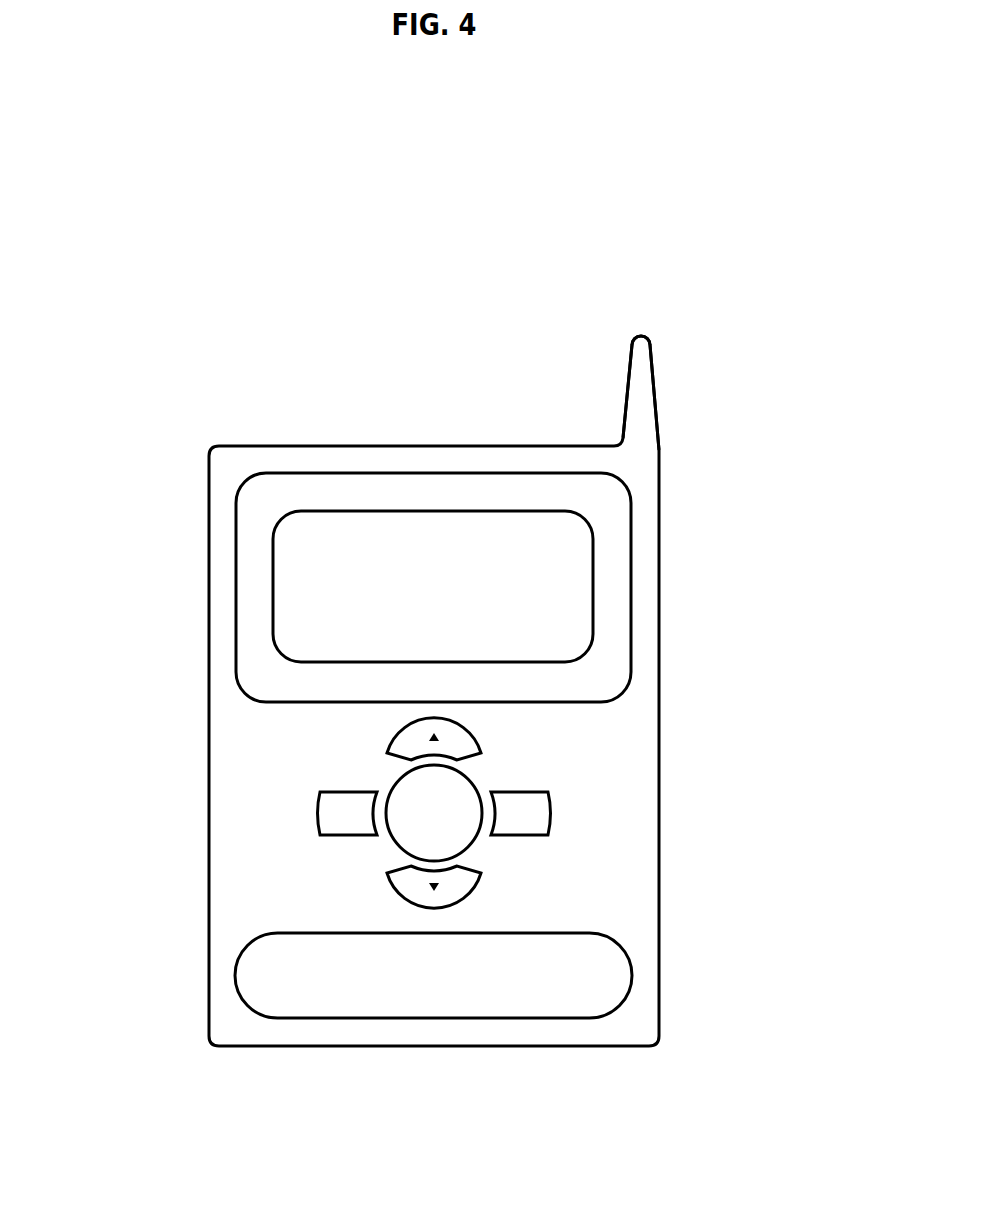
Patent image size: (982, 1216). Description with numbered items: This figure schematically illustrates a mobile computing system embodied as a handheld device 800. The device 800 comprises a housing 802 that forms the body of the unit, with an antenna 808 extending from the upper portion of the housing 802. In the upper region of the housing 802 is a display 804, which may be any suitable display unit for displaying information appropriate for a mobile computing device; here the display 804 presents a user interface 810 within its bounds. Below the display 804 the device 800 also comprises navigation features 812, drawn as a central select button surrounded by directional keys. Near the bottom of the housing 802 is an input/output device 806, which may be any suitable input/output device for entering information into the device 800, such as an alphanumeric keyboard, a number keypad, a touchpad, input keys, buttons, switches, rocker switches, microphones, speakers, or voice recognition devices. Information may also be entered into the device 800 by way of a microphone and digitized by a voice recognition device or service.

The device 800 is at (216, 330).
The housing 802 is at (209, 565).
The display 804 is at (633, 528).
The input/output device 806 is at (632, 978).
The antenna 808 is at (637, 407).
The user interface 810 is at (593, 622).
The navigation features 812 is at (577, 812).